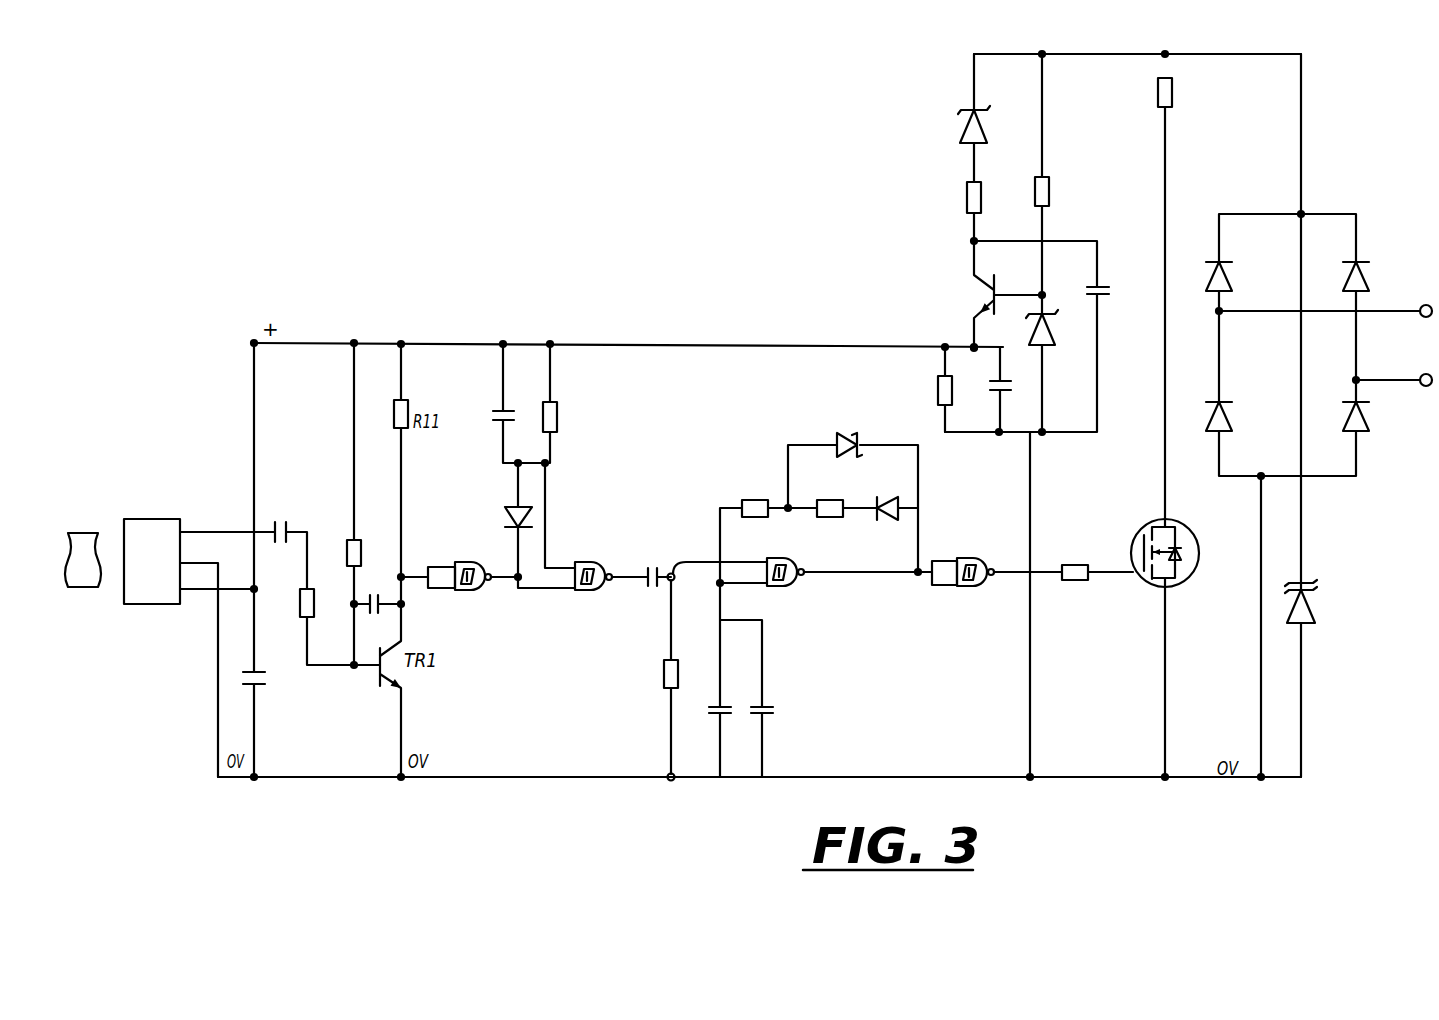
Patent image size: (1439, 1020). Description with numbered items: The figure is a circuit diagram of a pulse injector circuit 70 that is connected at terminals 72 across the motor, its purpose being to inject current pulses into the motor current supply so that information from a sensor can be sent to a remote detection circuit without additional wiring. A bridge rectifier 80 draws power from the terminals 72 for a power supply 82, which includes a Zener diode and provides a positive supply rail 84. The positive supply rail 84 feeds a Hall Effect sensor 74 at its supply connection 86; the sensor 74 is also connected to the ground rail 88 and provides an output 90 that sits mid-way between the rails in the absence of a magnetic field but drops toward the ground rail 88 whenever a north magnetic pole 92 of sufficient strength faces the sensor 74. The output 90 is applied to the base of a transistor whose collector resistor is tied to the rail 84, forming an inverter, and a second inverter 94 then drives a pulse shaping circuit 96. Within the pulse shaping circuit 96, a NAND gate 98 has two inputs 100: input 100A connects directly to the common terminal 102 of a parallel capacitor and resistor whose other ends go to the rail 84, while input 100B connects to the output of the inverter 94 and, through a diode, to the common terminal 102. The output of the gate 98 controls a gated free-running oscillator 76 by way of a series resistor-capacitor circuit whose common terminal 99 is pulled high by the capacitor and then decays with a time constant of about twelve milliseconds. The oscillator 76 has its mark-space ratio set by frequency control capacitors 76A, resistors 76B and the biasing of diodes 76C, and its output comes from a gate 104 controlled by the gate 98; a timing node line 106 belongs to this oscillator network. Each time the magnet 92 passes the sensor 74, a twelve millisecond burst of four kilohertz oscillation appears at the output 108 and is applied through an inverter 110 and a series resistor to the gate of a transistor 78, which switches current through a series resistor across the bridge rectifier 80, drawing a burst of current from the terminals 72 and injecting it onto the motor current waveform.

The circuit 70 is at (586, 300).
The terminals 72 is at (1421, 374).
The Hall Effect sensor 74 is at (140, 524).
The oscillator 76 is at (809, 592).
The frequency control capacitors 76A is at (762, 706).
The resistors 76B is at (827, 518).
The diodes 76C is at (848, 458).
The transistor 78 is at (1190, 578).
The bridge rectifier 80 is at (1287, 415).
The power supply 82 is at (949, 211).
The positive supply rail 84 is at (838, 345).
The supply connection of sensor 86 is at (199, 591).
The ground rail 88 is at (192, 560).
The output 90 is at (219, 531).
The north magnetic pole 92 is at (98, 535).
The second inverter 94 is at (467, 562).
The pulse shaping circuit 96 is at (568, 515).
The NAND gate 98 is at (588, 590).
The common terminal 99 is at (686, 562).
The inputs 100 is at (564, 597).
The input 100A is at (552, 565).
The input 100B is at (532, 589).
The common terminal 102 is at (516, 465).
The gate 104 is at (795, 586).
The timing node line 106 is at (721, 602).
The output 108 is at (917, 574).
The inverter 110 is at (975, 588).